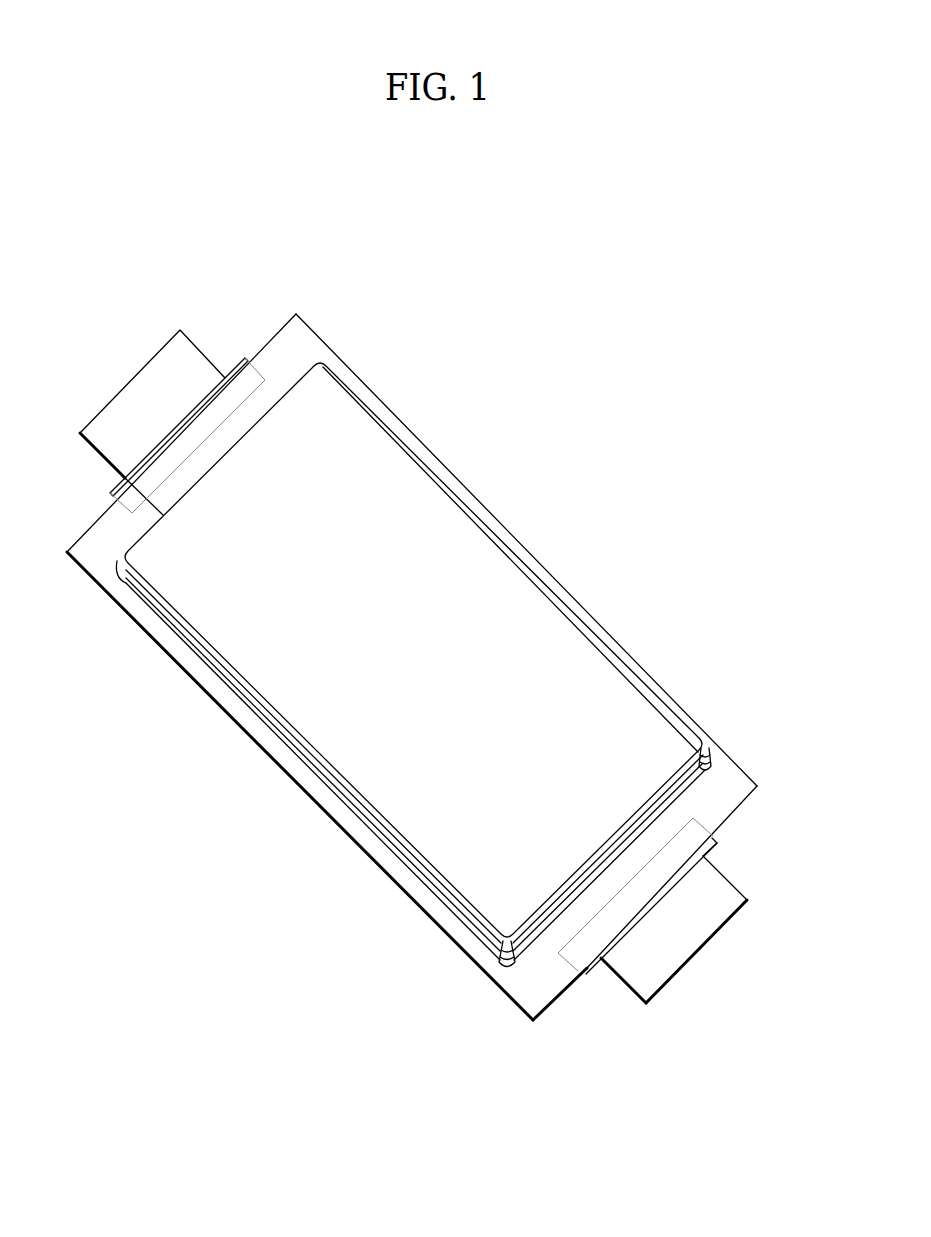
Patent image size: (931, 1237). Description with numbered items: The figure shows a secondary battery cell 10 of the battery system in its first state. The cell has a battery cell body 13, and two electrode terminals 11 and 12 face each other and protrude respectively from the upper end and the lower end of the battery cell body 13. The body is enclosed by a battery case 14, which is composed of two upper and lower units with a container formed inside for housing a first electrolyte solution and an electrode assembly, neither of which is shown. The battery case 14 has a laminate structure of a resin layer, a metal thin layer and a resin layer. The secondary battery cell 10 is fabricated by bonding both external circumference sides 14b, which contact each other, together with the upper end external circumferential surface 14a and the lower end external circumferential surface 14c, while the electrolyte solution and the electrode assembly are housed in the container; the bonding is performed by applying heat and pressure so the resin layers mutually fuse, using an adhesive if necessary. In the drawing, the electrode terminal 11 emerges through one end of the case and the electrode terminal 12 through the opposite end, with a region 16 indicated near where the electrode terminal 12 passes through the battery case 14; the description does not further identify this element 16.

The secondary battery cell 10 is at (451, 252).
The electrode terminal 11 is at (148, 380).
The electrode terminal 12 is at (697, 955).
The battery cell body 13 is at (503, 568).
The battery case 14 is at (437, 678).
The upper end external circumferential surface 14a is at (303, 338).
The external circumference sides 14b is at (407, 883).
The lower end external circumferential surface 14c is at (552, 982).
The tab slot 16 is at (715, 840).